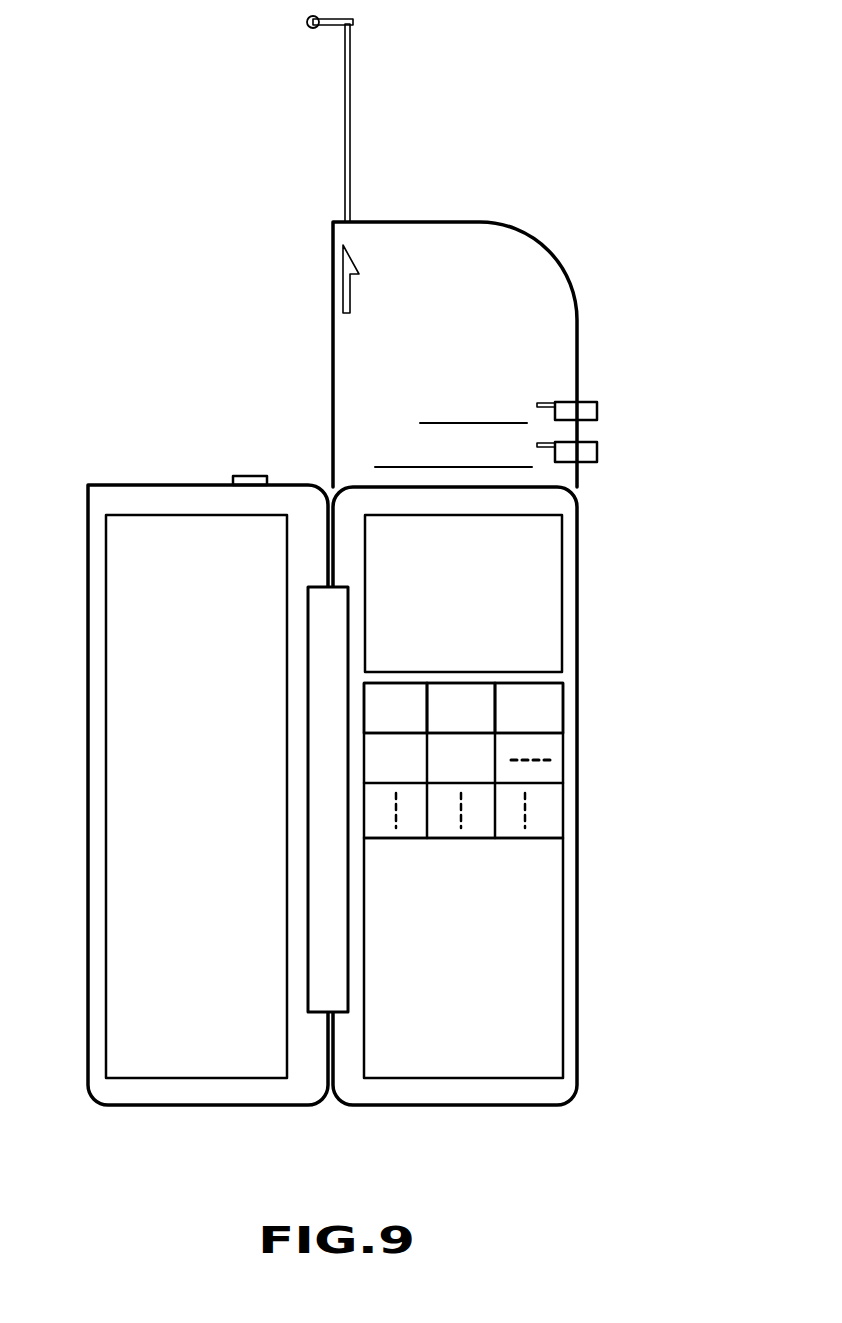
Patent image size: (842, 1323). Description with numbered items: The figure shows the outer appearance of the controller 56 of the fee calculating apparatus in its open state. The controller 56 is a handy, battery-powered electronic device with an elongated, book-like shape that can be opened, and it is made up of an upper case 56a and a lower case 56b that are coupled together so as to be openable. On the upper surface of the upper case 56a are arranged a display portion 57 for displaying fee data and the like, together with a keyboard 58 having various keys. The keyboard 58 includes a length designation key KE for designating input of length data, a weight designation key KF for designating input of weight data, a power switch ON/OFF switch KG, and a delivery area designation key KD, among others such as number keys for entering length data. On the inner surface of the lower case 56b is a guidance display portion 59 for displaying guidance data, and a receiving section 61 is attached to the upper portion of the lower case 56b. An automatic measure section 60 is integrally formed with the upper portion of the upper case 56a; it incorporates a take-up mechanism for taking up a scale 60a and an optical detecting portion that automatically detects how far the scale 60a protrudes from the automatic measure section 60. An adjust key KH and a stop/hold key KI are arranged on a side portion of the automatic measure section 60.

The controller 56 is at (363, 590).
The upper case 56a is at (515, 1090).
The lower case 56b is at (203, 1090).
The display portion 57 is at (550, 587).
The keyboard 58 is at (550, 958).
The guidance display portion 59 is at (123, 833).
The automatic measure section 60 is at (560, 297).
The scale 60a is at (351, 90).
The receiving section 61 is at (253, 476).
The delivery area designation key KD is at (553, 815).
The length designation key KE is at (412, 690).
The weight designation key KF is at (478, 690).
The power switch ON/OFF switch KG is at (553, 722).
The adjust key KH is at (597, 411).
The stop/hold key KI is at (597, 452).